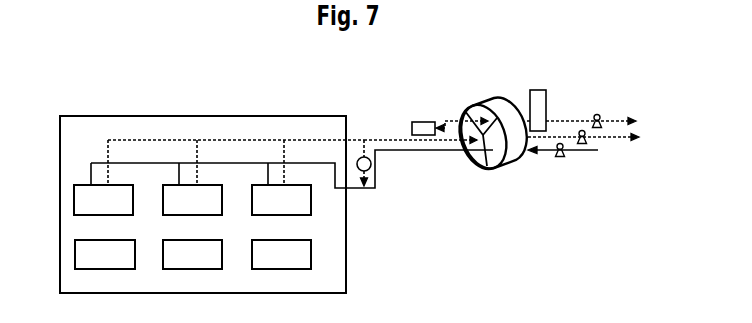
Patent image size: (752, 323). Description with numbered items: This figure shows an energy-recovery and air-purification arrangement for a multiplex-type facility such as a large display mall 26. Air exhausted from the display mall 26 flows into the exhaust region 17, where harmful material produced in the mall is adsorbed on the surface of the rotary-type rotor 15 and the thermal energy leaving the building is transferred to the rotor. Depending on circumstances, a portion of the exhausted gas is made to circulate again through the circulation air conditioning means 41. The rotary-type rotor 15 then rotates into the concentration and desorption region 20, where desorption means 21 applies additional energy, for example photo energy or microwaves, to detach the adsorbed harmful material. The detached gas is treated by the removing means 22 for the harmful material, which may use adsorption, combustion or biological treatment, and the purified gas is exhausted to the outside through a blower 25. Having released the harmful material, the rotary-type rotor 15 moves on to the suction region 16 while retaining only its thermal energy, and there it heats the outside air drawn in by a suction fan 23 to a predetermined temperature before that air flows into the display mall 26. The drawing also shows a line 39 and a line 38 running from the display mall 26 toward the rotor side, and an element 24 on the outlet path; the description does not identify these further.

The display mall 26 is at (110, 116).
The signal line 39 is at (183, 140).
The supply line 38 is at (262, 163).
The circulation air conditioning means 41 is at (371, 165).
The desorption means 21 is at (423, 122).
The exhaust region 17 is at (460, 112).
The concentration and desorption region 20 is at (478, 104).
The suction region 16 is at (470, 158).
The rotary-type rotor 15 is at (495, 162).
The removing means for the harmful material 22 is at (538, 90).
The blower 25 is at (597, 114).
The pressure sensor 24 is at (582, 145).
The suction fan 23 is at (560, 158).